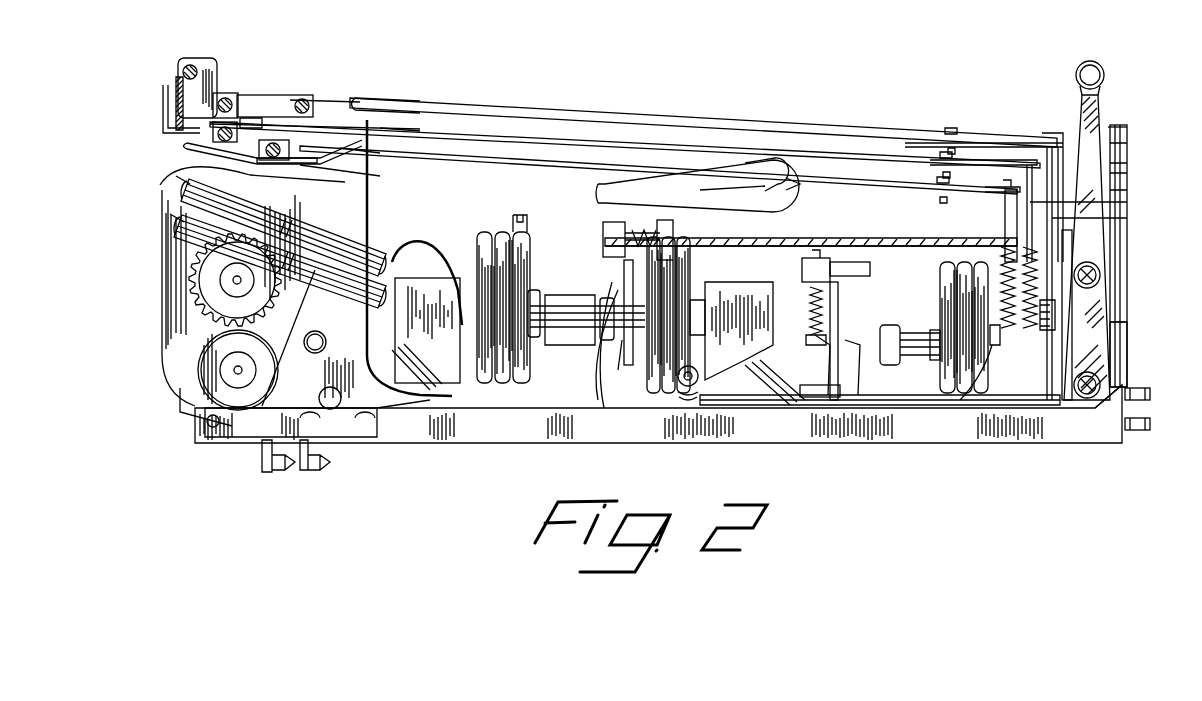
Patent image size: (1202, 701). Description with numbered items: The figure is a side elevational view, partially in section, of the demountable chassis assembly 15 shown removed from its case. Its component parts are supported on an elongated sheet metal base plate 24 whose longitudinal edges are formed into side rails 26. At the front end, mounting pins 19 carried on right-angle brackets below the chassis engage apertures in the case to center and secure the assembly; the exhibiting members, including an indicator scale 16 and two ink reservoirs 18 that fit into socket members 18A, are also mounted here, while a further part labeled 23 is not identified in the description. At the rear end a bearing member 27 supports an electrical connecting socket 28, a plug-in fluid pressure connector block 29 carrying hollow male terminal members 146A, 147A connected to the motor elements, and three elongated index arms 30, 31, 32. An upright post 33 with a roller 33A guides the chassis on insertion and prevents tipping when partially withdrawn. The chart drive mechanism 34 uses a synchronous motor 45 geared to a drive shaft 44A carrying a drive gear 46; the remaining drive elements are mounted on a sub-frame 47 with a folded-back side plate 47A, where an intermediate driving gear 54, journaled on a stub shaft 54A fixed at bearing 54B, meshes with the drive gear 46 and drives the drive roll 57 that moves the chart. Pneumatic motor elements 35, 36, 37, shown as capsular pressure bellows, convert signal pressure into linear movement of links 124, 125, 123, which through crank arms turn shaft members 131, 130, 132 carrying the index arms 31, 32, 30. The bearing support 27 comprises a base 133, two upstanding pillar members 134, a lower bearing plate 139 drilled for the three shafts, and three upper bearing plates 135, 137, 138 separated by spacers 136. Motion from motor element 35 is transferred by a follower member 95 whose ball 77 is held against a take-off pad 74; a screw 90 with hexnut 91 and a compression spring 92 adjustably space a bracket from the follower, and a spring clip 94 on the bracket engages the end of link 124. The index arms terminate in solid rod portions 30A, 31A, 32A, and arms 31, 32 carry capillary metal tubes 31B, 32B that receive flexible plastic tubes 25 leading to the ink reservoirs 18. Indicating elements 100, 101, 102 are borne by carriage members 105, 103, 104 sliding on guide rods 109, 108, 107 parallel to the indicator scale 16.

The demountable chassis assembly 15 is at (811, 445).
The indicator scale 16 is at (182, 60).
The ink reservoirs 18 is at (268, 222).
The socket members 18A is at (350, 283).
The mounting pins 19 is at (312, 470).
The bracket 23 is at (180, 414).
The base plate 24 is at (722, 441).
The flexible plastic tube 25 is at (180, 222).
The side rails 26 is at (898, 410).
The bearing member 27 is at (1130, 133).
The electrical connecting socket 28 is at (1107, 287).
The plug-in fluid pressure connector block 29 is at (1125, 385).
The index arm 30 is at (860, 136).
The solid rod portion 30A is at (372, 103).
The index arm 31 is at (858, 161).
The solid rod portion 31A is at (405, 129).
The capillary metal tube 31B is at (372, 151).
The index arm 32 is at (858, 188).
The solid rod portion 32A is at (295, 162).
The capillary metal tube 32B is at (380, 177).
The upright post 33 is at (1098, 121).
The roller 33A is at (1096, 62).
The chart drive mechanism 34 is at (184, 350).
The pneumatic motor element 35 is at (482, 230).
The pneumatic motor element 36 is at (694, 281).
The pneumatic motor element 37 is at (945, 260).
The drive shaft 44A is at (324, 343).
The motor 45 is at (418, 242).
The drive gear 46 is at (318, 331).
The sub-frame 47 is at (160, 325).
The side plate 47A is at (172, 250).
The intermediate driving gear 54 is at (215, 278).
The stub shaft 54A is at (232, 283).
The bearing 54B is at (225, 300).
The drive roll 57 is at (195, 168).
The take-off pad 74 is at (612, 295).
The ball 77 is at (732, 370).
The screw 90 is at (655, 228).
The hexnut 91 is at (603, 229).
The compression spring 92 is at (598, 198).
The spring clip 94 is at (605, 408).
The follower member 95 is at (624, 270).
The indicating element 100 is at (185, 145).
The indicating element 101 is at (162, 110).
The indicating element 102 is at (178, 80).
The carriage member 103 is at (232, 127).
The carriage member 104 is at (245, 95).
The carriage member 105 is at (340, 102).
The guide rod 107 is at (227, 92).
The guide rod 108 is at (230, 128).
The guide rod 109 is at (245, 150).
The link 123 is at (870, 268).
The link 124 is at (775, 247).
The link 125 is at (800, 238).
The shaft member 130 is at (1005, 213).
The shaft member 131 is at (1128, 202).
The shaft member 132 is at (1128, 219).
The base 133 is at (1120, 350).
The upstanding pillar member 134 is at (1122, 266).
The upper bearing plate 135 is at (1003, 185).
The spacer 136 is at (1128, 166).
The upper bearing plate 137 is at (1028, 160).
The upper bearing plate 138 is at (1050, 135).
The lower bearing plate 139 is at (938, 320).
The hollow male terminal member 146A is at (1158, 422).
The hollow male terminal member 147A is at (1158, 393).